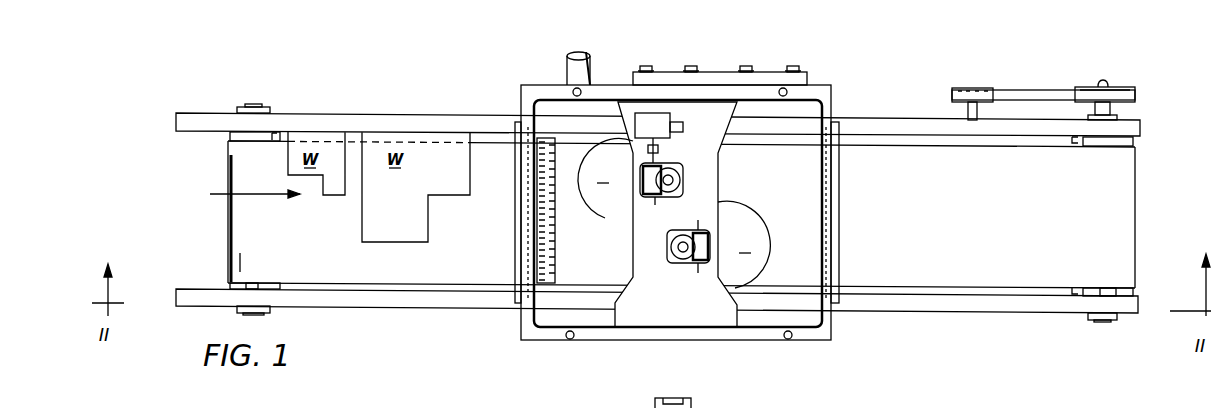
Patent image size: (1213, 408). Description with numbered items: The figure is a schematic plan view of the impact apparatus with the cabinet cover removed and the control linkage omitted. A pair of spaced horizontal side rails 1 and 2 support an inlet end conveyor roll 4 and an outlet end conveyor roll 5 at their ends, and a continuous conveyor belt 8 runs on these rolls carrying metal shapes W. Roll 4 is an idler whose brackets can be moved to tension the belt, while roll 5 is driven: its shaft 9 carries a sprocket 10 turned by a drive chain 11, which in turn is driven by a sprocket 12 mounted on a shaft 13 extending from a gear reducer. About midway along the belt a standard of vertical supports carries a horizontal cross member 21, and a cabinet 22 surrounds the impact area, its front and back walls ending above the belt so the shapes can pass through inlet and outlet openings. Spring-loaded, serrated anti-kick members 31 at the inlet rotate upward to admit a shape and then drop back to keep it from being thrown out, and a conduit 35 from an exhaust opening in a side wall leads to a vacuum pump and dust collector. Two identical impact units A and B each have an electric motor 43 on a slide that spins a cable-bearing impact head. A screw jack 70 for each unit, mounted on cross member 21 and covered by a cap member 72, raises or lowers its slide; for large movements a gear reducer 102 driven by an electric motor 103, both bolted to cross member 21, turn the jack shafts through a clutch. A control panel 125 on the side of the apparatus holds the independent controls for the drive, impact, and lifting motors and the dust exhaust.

The side rail 1 is at (216, 116).
The side rail 2 is at (212, 300).
The inlet end conveyor roll 4 is at (250, 283).
The outlet end conveyor roll 5 is at (1112, 287).
The continuous conveyor belt 8 is at (348, 272).
The shaft 9 is at (1122, 102).
The sprocket 10 is at (1128, 88).
The drive chain 11 is at (1026, 90).
The sprocket 12 is at (955, 88).
The shaft 13 is at (966, 110).
The horizontal cross member 21 is at (720, 160).
The cabinet 22 is at (514, 334).
The anti-kick members 31 is at (558, 277).
The conduit 35 is at (567, 72).
The electric motor 43 is at (588, 186).
The screw jack 70 is at (648, 185).
The cap member 72 is at (672, 179).
The gear reducer 102 is at (647, 122).
The electric motor 103 is at (683, 126).
The control panel 125 is at (805, 83).